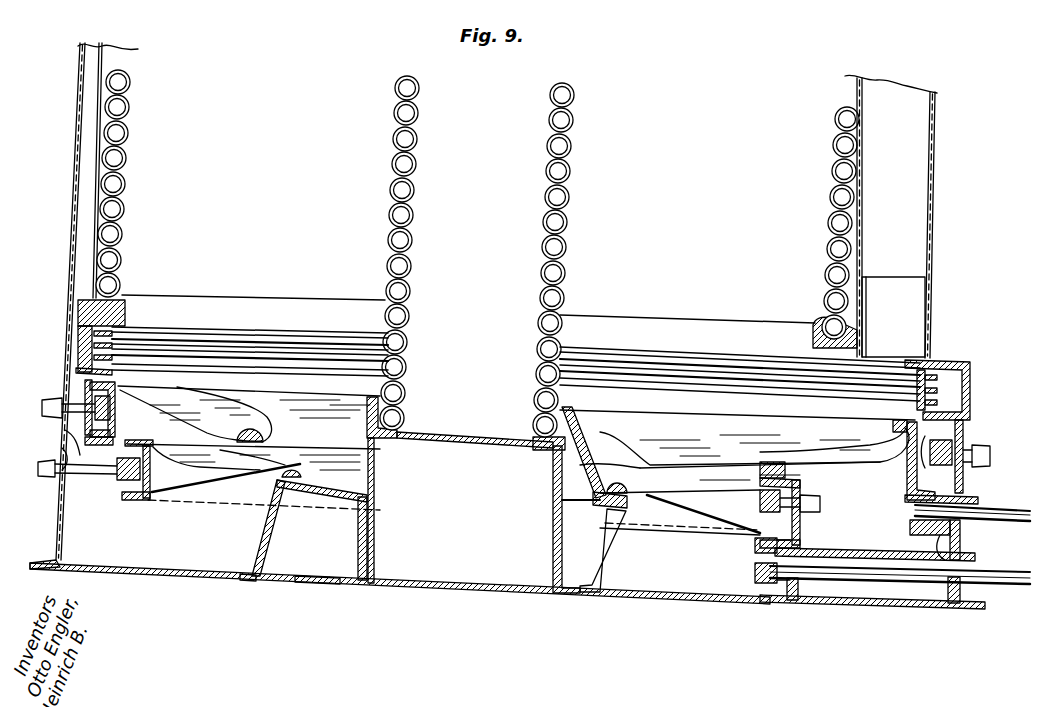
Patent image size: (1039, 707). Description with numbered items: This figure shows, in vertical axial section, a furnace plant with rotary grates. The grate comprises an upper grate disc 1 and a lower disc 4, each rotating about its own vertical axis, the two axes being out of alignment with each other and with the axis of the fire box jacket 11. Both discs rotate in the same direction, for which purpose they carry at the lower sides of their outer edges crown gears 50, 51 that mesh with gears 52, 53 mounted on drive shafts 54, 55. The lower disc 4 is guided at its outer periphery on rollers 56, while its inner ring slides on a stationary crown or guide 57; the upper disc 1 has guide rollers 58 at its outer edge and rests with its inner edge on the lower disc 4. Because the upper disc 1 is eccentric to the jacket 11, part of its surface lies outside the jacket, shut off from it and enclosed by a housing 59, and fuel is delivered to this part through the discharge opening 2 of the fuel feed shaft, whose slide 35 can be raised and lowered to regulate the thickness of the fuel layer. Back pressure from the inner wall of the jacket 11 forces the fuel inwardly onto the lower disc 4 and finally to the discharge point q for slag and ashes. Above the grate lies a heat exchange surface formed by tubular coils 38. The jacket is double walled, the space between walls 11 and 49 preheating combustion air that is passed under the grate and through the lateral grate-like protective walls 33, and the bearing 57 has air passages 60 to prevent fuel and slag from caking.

The upper grate disc 1 is at (116, 418).
The discharge opening of the fuel feed shaft 2 is at (922, 326).
The lower disc 4 is at (150, 478).
The fire box jacket 11 is at (866, 118).
The grate-like protective walls 33 is at (92, 352).
The slide 35 is at (866, 315).
The tubular coils 38 is at (130, 152).
The outer wall of jacket 49 is at (76, 156).
The crown gear of upper disc 50 is at (942, 485).
The crown gear of lower disc 51 is at (672, 536).
The gear 52 is at (912, 529).
The gear 53 is at (760, 562).
The drive shaft 54 is at (997, 510).
The drive shaft 55 is at (1005, 585).
The rollers 56 is at (118, 490).
The stationary crown or guide 57 is at (607, 503).
The guide rollers 58 is at (952, 445).
The housing 59 is at (966, 394).
The air passages 60 is at (560, 464).
The discharge point for slag and ashes q is at (378, 454).